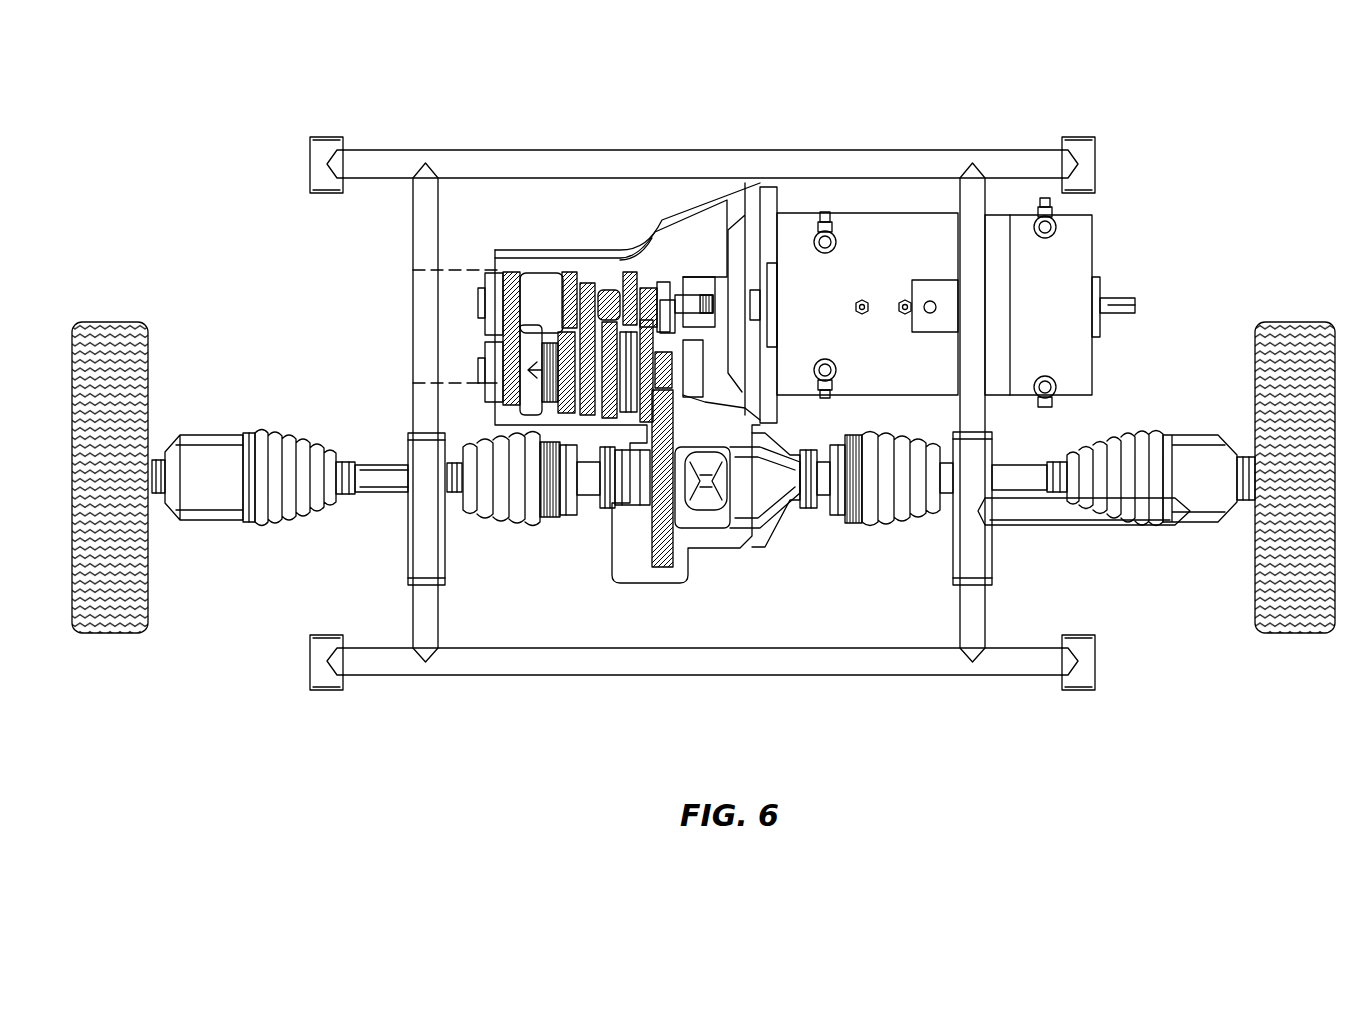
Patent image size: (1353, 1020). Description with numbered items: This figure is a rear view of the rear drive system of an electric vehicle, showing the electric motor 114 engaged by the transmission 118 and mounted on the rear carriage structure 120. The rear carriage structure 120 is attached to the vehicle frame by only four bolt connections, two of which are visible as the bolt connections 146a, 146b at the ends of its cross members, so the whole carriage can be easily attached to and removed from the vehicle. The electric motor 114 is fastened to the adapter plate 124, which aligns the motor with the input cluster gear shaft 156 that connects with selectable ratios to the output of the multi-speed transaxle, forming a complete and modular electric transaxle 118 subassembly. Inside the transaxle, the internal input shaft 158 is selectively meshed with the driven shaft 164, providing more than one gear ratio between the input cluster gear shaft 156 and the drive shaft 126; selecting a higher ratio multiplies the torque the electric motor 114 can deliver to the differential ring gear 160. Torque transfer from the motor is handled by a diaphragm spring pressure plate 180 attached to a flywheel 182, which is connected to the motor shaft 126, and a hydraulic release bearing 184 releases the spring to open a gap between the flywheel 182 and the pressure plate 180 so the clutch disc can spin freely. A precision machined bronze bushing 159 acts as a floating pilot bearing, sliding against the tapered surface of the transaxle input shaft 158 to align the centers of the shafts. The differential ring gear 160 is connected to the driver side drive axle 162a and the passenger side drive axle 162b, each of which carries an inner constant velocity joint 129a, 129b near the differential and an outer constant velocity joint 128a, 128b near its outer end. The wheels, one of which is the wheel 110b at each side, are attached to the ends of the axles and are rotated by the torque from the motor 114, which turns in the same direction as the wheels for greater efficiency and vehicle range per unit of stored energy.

The wheel 110b is at (105, 632).
The electric motor 114 is at (895, 195).
The transmission 118 is at (640, 238).
The rear carriage structure 120 is at (700, 667).
The adapter plate 124 is at (768, 196).
The drive shaft 126 is at (1105, 290).
The outer constant velocity joint 128a is at (298, 522).
The outer constant velocity joint 128b is at (1112, 440).
The inner constant velocity joint 129a is at (524, 525).
The inner constant velocity joint 129b is at (890, 525).
The bolt connection 146a is at (312, 152).
The bolt connection 146b is at (1095, 162).
The input cluster gear shaft 156 is at (545, 300).
The transaxle input shaft 158 is at (628, 246).
The bronze bushing 159 is at (740, 520).
The differential ring gear 160 is at (628, 582).
The driver side drive axle 162a is at (383, 480).
The passenger side drive axle 162b is at (1022, 482).
The driven shaft 164 is at (515, 412).
The diaphragm spring pressure plate 180 is at (697, 262).
The flywheel 182 is at (733, 235).
The hydraulic release bearing 184 is at (686, 262).